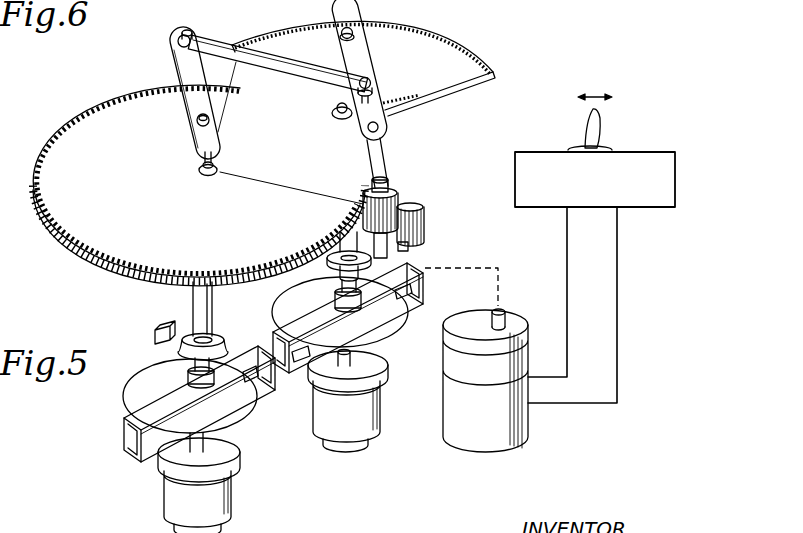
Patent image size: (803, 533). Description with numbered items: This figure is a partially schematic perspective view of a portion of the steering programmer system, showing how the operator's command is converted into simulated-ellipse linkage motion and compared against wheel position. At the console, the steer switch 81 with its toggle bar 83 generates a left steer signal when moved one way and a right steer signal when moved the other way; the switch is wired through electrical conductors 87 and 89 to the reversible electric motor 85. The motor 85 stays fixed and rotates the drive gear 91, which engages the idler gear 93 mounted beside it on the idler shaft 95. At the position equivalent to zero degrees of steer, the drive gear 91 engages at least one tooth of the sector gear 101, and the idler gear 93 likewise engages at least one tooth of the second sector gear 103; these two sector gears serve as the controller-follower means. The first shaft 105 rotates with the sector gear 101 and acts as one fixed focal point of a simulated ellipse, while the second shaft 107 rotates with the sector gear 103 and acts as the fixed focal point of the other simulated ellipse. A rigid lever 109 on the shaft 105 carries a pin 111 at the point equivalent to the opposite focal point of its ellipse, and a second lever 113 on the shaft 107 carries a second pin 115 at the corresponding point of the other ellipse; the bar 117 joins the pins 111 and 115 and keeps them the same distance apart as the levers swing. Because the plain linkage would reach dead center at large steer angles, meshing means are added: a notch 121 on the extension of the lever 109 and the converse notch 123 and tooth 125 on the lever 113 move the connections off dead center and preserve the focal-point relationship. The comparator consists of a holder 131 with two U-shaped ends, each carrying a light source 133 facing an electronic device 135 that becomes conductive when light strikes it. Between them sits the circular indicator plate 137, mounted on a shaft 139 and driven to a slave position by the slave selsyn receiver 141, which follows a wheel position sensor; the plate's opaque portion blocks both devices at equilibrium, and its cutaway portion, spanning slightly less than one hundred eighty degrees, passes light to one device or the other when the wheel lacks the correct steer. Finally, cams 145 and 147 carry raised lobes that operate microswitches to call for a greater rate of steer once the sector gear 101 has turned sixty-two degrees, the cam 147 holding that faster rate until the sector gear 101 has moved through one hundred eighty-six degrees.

The steer switch 81 is at (655, 206).
The toggle bar 83 is at (598, 112).
The reversible electric motor 85 is at (457, 417).
The electrical conductor 87 is at (617, 305).
The electrical conductor 89 is at (567, 243).
The drive gear 91 is at (418, 213).
The idler gear 93 is at (400, 199).
The idler shaft 95 is at (388, 184).
The sector gear 101 is at (450, 52).
The second sector gear 103 is at (78, 118).
The first shaft 105 is at (346, 28).
The second shaft 107 is at (190, 118).
The lever 109 is at (360, 63).
The pin 111 is at (371, 100).
The second lever 113 is at (179, 62).
The second pin 115 is at (232, 40).
The bar 117 is at (224, 48).
The notch 121 is at (374, 132).
The notch 123 is at (186, 30).
The tooth 125 is at (200, 163).
The holder 131 is at (280, 386).
The light source 133 is at (412, 294).
The electronic device 135 is at (410, 310).
The indicator plate 137 is at (280, 305).
The shaft 139 is at (352, 362).
The slave selsyn receiver 141 is at (347, 425).
The cam 145 is at (213, 338).
The cam 147 is at (324, 258).